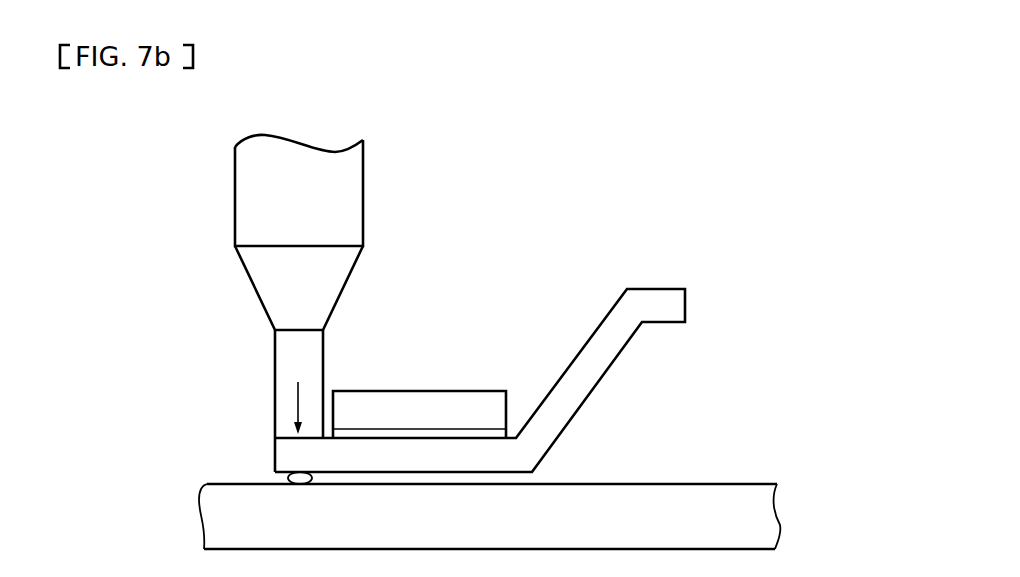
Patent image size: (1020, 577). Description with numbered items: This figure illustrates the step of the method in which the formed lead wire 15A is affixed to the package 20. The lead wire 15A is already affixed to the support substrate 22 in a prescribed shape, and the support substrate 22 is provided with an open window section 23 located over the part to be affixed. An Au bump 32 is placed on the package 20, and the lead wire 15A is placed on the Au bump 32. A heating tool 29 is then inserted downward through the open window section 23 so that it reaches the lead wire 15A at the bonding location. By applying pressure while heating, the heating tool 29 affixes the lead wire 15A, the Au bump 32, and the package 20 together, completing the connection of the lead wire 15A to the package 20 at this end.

The heating tool 29 is at (328, 178).
The open window section 23 is at (334, 372).
The support substrate 22 is at (432, 374).
The lead wire 15A is at (518, 458).
The Au bump 32 is at (288, 478).
The package 20 is at (743, 523).